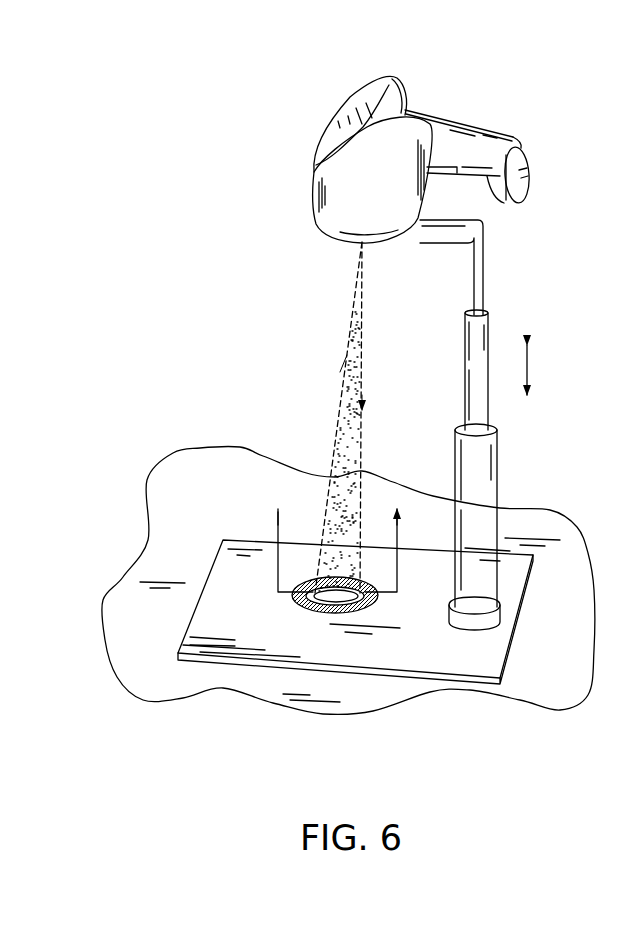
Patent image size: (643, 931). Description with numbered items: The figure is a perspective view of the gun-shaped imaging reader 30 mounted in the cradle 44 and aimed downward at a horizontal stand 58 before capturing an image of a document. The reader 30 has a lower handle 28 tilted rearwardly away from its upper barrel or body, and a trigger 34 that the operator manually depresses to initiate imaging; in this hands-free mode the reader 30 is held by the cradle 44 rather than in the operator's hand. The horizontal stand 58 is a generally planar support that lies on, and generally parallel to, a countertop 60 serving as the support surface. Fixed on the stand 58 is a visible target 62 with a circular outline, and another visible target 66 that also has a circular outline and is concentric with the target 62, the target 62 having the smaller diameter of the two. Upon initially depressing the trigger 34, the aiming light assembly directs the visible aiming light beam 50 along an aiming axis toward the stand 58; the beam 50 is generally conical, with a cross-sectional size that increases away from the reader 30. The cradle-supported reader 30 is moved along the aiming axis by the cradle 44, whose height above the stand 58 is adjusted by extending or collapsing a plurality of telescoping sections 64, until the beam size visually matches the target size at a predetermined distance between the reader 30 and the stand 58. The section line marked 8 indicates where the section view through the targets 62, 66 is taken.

The handle 28 is at (427, 108).
The imaging reader 30 is at (407, 144).
The trigger 34 is at (442, 173).
The cradle 44 is at (315, 203).
The visible aiming light beam 50 is at (338, 420).
The horizontal stand 58 is at (210, 516).
The countertop 60 is at (113, 653).
The target 62 is at (343, 613).
The telescoping sections 64 is at (465, 375).
The target 66 is at (302, 608).
The section line 8- 8 is at (337, 536).